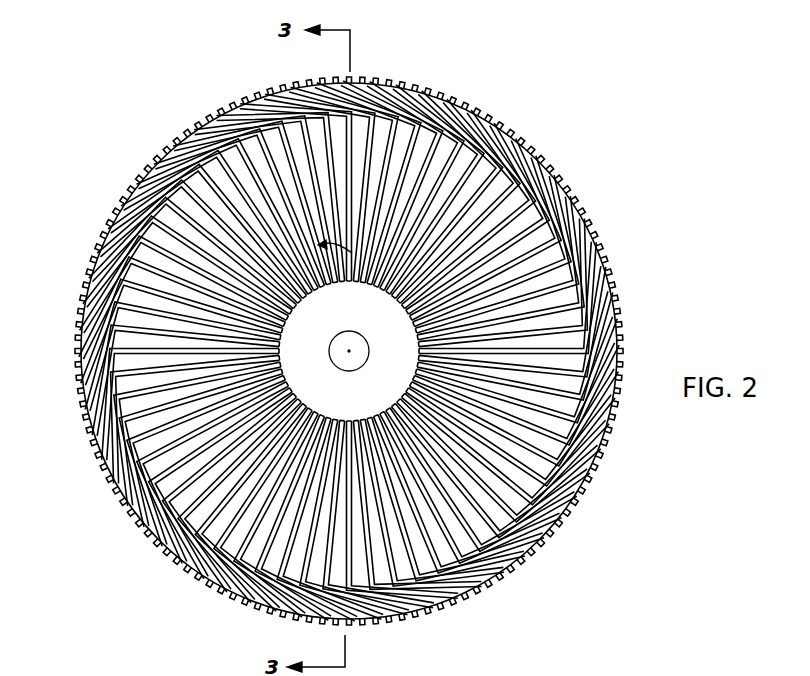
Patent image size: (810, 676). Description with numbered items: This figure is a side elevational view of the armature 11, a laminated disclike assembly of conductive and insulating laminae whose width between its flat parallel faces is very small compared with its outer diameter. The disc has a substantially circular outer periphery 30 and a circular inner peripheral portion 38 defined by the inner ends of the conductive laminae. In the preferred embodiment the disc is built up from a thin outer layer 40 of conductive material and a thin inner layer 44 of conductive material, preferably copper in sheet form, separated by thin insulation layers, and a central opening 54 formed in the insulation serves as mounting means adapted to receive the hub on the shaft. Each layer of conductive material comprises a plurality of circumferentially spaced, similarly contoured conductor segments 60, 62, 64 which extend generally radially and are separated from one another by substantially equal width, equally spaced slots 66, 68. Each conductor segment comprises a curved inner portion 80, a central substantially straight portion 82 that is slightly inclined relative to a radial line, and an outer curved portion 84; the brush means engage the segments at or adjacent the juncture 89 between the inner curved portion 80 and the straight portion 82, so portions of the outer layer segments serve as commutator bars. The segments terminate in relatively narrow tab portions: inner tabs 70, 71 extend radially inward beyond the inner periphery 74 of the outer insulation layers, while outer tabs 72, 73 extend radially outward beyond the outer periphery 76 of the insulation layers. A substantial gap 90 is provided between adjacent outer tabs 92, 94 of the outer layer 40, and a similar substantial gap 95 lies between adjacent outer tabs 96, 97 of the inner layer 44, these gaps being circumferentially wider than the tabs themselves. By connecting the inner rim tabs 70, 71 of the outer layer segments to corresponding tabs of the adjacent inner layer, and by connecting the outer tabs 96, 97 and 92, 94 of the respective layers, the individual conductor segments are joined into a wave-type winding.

The armature 11 is at (486, 97).
The outer periphery 30 is at (612, 270).
The inner peripheral portion 38 is at (282, 331).
The outer layer of conductive material 40 is at (538, 148).
The inner layer of conductive material 44 is at (552, 162).
The central opening 54 is at (370, 358).
The conductor segment 60 is at (117, 485).
The conductor segment 62 is at (152, 474).
The conductor segment 64 is at (172, 487).
The slot 66 is at (140, 452).
The slot 68 is at (152, 546).
The inner tab portion 70 is at (297, 356).
The inner tab portion 71 is at (284, 375).
The outer tab portion 72 is at (193, 578).
The outer tab portion 73 is at (218, 590).
The inner periphery of the outer insulation layers 74 is at (307, 415).
The outer periphery of the insulation layers 76 is at (252, 607).
The curved inner portion 80 is at (357, 268).
The central substantially straight portion 82 is at (268, 195).
The outer curved portion 84 is at (192, 146).
The juncture 89 is at (305, 190).
The gap 90 is at (168, 138).
The outer tab 92 is at (150, 156).
The outer tab 94 is at (171, 138).
The gap 95 is at (80, 291).
The outer tab 96 is at (82, 298).
The outer tab 97 is at (92, 266).